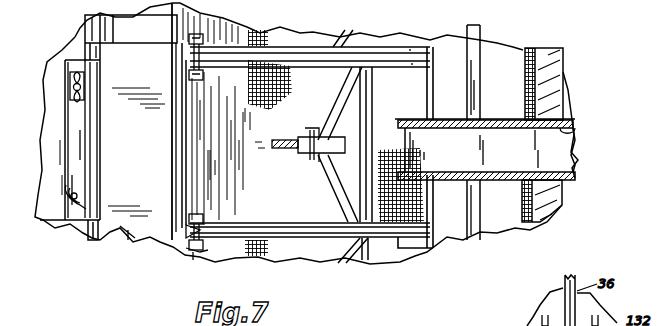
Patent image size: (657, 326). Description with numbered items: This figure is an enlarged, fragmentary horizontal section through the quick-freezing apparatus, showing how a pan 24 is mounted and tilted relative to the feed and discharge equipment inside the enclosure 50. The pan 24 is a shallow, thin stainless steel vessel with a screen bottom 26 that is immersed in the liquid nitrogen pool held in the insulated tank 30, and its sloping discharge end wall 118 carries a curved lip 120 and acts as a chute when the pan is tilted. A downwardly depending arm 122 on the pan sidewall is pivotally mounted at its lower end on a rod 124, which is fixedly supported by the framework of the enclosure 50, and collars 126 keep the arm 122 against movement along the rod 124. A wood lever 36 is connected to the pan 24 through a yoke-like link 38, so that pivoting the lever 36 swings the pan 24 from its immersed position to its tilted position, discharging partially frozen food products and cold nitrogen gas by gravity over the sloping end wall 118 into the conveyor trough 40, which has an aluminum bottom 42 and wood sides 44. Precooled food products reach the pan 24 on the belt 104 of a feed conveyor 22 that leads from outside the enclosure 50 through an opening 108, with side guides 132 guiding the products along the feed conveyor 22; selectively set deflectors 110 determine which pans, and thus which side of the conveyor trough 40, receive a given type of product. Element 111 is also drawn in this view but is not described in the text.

The feed conveyor 22 is at (578, 152).
The pan 24 is at (404, 46).
The screen bottom 26 is at (250, 31).
The tank 30 is at (462, 72).
The wood lever 36 is at (285, 150).
The yoke-like link 38 is at (326, 170).
The conveyor trough 40 is at (138, 240).
The aluminum bottom 42 is at (118, 236).
The wood sides 44 is at (172, 148).
The enclosure 50 is at (557, 205).
The belt 104 is at (500, 176).
The opening 108 is at (575, 128).
The deflector 110 is at (44, 220).
The pin 111 is at (87, 242).
The sloping discharge end wall 118 is at (242, 152).
The curved lip 120 is at (195, 183).
The arm 122 is at (186, 234).
The rod 124 is at (195, 258).
The collar 126 is at (190, 72).
The side guide 132 is at (484, 119).